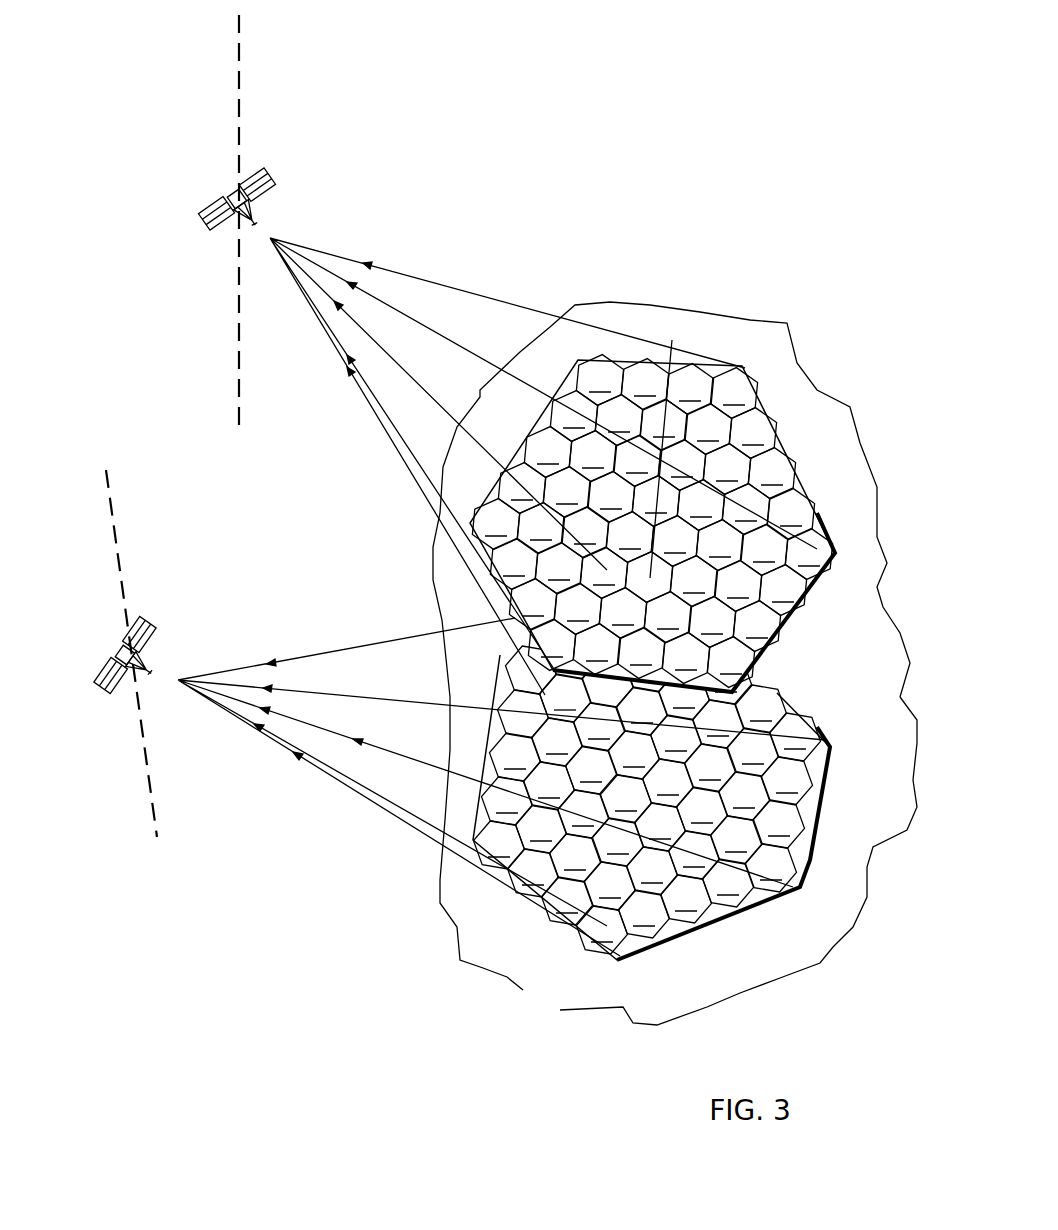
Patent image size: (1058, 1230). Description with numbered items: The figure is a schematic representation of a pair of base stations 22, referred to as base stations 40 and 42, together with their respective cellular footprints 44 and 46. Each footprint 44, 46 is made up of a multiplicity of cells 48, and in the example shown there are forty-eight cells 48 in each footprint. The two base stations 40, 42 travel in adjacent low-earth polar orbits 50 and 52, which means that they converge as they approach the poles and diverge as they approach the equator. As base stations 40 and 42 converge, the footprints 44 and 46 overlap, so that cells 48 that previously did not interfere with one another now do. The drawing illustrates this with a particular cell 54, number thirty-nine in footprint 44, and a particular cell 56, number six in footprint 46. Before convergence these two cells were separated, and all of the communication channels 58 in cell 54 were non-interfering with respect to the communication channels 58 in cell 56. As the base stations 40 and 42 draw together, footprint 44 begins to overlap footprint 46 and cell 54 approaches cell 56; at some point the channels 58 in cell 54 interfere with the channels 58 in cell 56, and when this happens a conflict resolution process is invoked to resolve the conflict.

The base station 22 is at (184, 423).
The base station 40 is at (272, 172).
The base station 42 is at (157, 627).
The cellular footprint 44 is at (790, 443).
The cellular footprint 46 is at (833, 770).
The cell 48 is at (657, 653).
The low-earth polar orbit 50 is at (240, 62).
The low-earth polar orbit 52 is at (117, 517).
The cell 54 is at (578, 591).
The cell 56 is at (553, 695).
The communication channel 58 is at (403, 277).